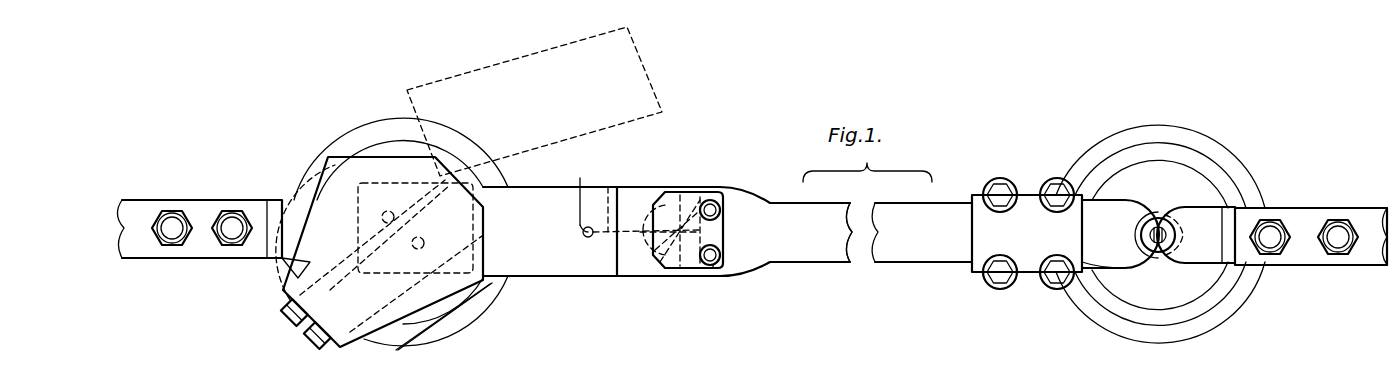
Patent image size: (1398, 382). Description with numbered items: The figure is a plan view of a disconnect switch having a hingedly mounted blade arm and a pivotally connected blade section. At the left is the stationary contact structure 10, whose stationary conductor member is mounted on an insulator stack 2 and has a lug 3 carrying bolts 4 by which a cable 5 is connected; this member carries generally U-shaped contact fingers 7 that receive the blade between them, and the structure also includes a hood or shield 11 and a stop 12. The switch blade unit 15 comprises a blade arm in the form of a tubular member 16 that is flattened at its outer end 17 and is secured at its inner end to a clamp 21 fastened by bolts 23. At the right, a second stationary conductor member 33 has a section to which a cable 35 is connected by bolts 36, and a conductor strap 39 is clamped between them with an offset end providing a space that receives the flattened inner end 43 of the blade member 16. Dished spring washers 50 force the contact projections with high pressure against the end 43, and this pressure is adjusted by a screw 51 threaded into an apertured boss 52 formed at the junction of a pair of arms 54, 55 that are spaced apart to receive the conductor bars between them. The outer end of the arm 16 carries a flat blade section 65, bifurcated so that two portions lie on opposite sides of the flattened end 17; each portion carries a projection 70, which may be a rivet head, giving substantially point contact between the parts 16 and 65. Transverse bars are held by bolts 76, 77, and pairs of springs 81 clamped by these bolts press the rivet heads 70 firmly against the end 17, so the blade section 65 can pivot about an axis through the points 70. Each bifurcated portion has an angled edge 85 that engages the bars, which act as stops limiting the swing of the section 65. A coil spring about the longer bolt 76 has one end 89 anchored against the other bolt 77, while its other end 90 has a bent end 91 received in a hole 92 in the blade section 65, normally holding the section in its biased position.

The insulator stack 2 is at (364, 140).
The lug 3 is at (232, 232).
The bolts 4 is at (172, 232).
The cable 5 is at (136, 200).
The contact fingers 7 is at (366, 325).
The stationary contact structure 10 is at (462, 132).
The hood or shield 11 is at (290, 268).
The stop 12 is at (430, 312).
The switch blade unit 15 is at (752, 266).
The tubular member 16 is at (842, 258).
The flattened outer end 17 is at (700, 268).
The clamp 21 is at (948, 258).
The bolts 23 is at (1052, 182).
The second stationary conductor member 33 is at (1250, 276).
The cable 35 is at (1306, 212).
The bolts 36 is at (1338, 240).
The conductor strap 39 is at (1254, 198).
The flattened inner end 43 is at (1110, 200).
The dished spring washers 50 is at (1132, 234).
The screw 51 is at (1140, 264).
The apertured boss 52 is at (1158, 218).
The arm 54 is at (1180, 264).
The arm 55 is at (1200, 210).
The blade section 65 is at (446, 92).
The projection 70 is at (660, 196).
The bolt 76 is at (720, 205).
The bolt 77 is at (712, 270).
The springs 81 is at (678, 268).
The angled edge 85 is at (655, 262).
The end of spring 89 is at (725, 235).
The other end of spring 90 is at (615, 190).
The bent end 91 is at (588, 240).
The hole 92 is at (580, 192).